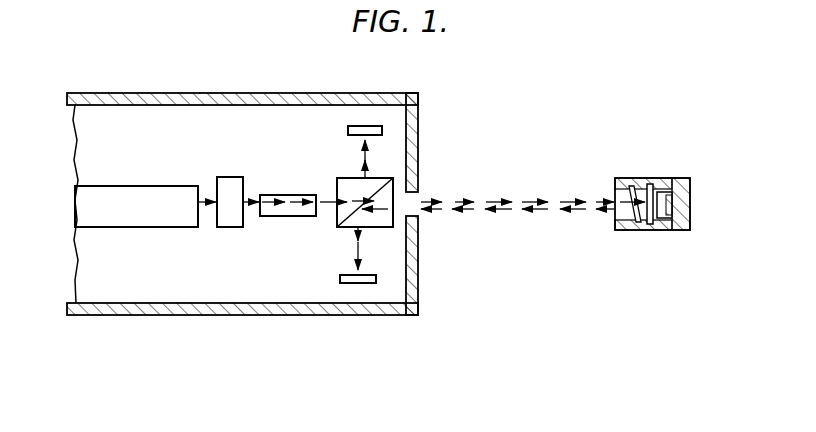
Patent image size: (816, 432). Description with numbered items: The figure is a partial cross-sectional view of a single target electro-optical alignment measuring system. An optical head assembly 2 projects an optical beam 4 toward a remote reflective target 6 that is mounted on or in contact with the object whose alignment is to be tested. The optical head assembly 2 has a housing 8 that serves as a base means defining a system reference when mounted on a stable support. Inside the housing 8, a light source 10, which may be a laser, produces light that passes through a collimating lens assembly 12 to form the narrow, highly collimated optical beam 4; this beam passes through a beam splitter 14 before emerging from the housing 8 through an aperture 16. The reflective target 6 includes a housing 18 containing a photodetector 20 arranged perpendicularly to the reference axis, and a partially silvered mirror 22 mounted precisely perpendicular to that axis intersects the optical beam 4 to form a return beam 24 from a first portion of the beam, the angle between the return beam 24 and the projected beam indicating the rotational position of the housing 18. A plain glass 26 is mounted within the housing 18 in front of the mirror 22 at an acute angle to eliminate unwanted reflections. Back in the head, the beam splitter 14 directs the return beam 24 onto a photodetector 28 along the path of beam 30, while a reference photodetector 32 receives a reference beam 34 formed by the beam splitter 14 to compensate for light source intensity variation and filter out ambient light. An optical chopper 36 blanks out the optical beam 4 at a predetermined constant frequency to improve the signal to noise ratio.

The optical head assembly 2 is at (228, 337).
The optical beam 4 is at (505, 200).
The reflective target 6 is at (657, 194).
The housing 8 is at (339, 315).
The light source 10 is at (125, 189).
The collimating lens assembly 12 is at (282, 196).
The beam splitter 14 is at (373, 223).
The aperture 16 is at (416, 197).
The housing 18 is at (672, 231).
The photodetector 20 is at (678, 201).
The partially silvered mirror 22 is at (639, 185).
The return beam 24 is at (518, 210).
The plain glass 26 is at (632, 213).
The photodetector 28 is at (348, 283).
The beam 30 is at (350, 252).
The reference photodetector 32 is at (350, 128).
The reference beam 34 is at (354, 152).
The optical chopper 36 is at (232, 180).